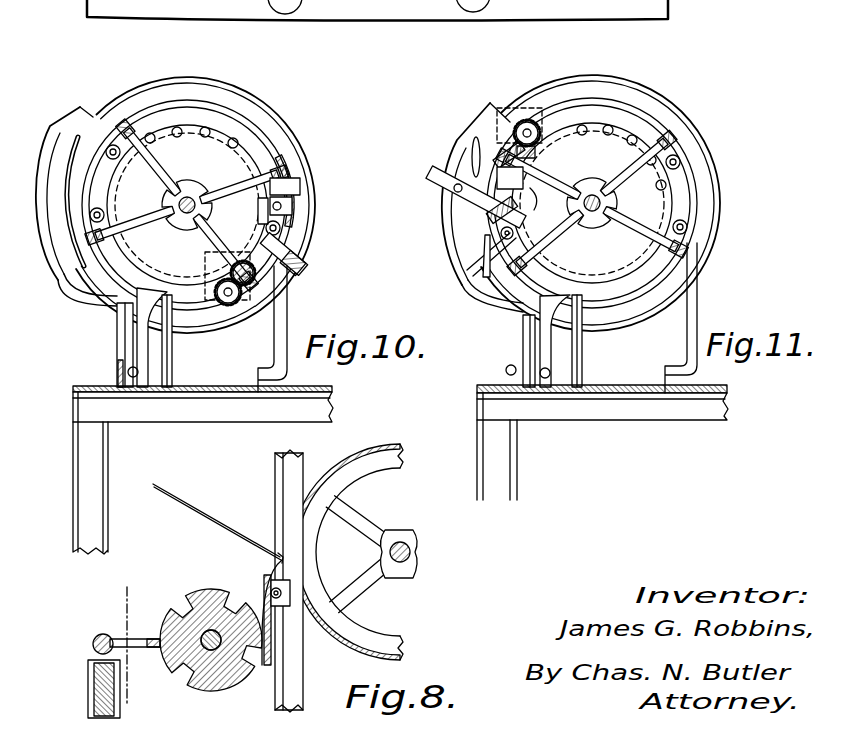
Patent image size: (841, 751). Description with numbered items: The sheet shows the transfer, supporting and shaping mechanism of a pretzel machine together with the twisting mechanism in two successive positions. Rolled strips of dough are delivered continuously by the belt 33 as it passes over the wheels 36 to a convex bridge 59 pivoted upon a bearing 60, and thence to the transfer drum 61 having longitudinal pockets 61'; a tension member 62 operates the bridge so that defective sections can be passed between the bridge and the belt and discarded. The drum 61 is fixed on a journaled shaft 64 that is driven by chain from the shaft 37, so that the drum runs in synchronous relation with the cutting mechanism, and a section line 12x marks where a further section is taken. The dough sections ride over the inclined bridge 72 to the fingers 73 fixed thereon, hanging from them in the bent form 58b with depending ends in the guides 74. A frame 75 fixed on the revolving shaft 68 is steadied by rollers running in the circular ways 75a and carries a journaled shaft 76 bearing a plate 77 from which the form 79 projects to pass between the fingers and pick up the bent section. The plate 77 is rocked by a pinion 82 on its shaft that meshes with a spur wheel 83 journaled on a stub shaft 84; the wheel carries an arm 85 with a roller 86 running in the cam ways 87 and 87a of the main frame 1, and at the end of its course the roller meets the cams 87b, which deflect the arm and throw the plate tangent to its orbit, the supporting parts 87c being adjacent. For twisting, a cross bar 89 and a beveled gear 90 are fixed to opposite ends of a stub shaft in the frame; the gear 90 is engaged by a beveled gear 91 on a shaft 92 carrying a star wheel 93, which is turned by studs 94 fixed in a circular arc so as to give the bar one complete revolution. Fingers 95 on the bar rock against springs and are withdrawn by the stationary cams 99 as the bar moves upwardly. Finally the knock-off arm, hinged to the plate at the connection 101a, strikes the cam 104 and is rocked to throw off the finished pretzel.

In FIG. 11, the frame 1 is at (674, 94).
In FIG. 8, the section line 12x is at (133, 643).
In FIG. 8, the belt 33 is at (363, 448).
In FIG. 8, the wheels 36 is at (385, 648).
In FIG. 8, the shaft 37 is at (416, 552).
In FIG. 10, the bent section of dough 58b is at (300, 178).
In FIG. 8, the bent section of dough 58b is at (95, 639).
In FIG. 8, the convex bridge 59 is at (268, 568).
In FIG. 8, the bearing 60 is at (282, 602).
In FIG. 8, the transfer drum 61 is at (211, 618).
In FIG. 8, the longitudinal channels or pockets 61' is at (160, 598).
In FIG. 8, the tension member 62 is at (207, 512).
In FIG. 8, the journaled shaft 64 is at (192, 675).
In FIG. 10, the journaled shaft 68 is at (187, 212).
In FIG. 11, the journaled shaft 68 is at (592, 216).
In FIG. 10, the inclined bridge 72 is at (88, 2).
In FIG. 8, the inclined bridge 72 is at (130, 645).
In FIG. 8, the fingers 73 is at (96, 652).
In FIG. 8, the guides 74 is at (90, 692).
In FIG. 10, the frame 75 is at (128, 133).
In FIG. 11, the frame 75 is at (612, 188).
In FIG. 10, the circular ways 75a is at (280, 165).
In FIG. 11, the circular ways 75a is at (606, 102).
In FIG. 10, the journaled shaft 76 is at (262, 208).
In FIG. 11, the journaled shaft 76 is at (498, 268).
In FIG. 10, the plate 77 is at (290, 152).
In FIG. 11, the plate 77 is at (472, 232).
In FIG. 10, the form 79 is at (300, 207).
In FIG. 10, the pinion 82 is at (300, 192).
In FIG. 11, the pinion 82 is at (490, 270).
In FIG. 10, the spur wheel 83 is at (266, 229).
In FIG. 10, the stub shaft 84 is at (298, 221).
In FIG. 11, the stub shaft 84 is at (478, 262).
In FIG. 10, the arm 85 is at (278, 264).
In FIG. 11, the arm 85 is at (440, 188).
In FIG. 10, the roller 86 is at (290, 268).
In FIG. 11, the roller 86 is at (445, 208).
In FIG. 10, the cam way 87 is at (206, 96).
In FIG. 11, the cam way 87 is at (643, 106).
In FIG. 10, the cam way 87a is at (60, 136).
In FIG. 11, the cam way 87a is at (482, 116).
In FIG. 10, the cams 87b is at (82, 290).
In FIG. 11, the cams 87b is at (500, 318).
In FIG. 10, the leg 87c is at (140, 318).
In FIG. 11, the leg 87c is at (553, 322).
In FIG. 10, the cross bar 89 is at (293, 249).
In FIG. 11, the cross bar 89 is at (520, 192).
In FIG. 10, the beveled gear 90 is at (255, 312).
In FIG. 11, the beveled gear 90 is at (530, 118).
In FIG. 10, the beveled gear 91 is at (218, 285).
In FIG. 10, the shaft 92 is at (224, 303).
In FIG. 11, the shaft 92 is at (563, 155).
In FIG. 10, the star wheel 93 is at (230, 320).
In FIG. 11, the star wheel 93 is at (524, 120).
In FIG. 10, the studs or pins 94 is at (150, 133).
In FIG. 11, the studs or pins 94 is at (592, 124).
In FIG. 10, the fingers 95 is at (298, 248).
In FIG. 11, the fingers 95 is at (476, 148).
In FIG. 10, the stationary cams 99 is at (284, 346).
In FIG. 11, the stationary cams 99 is at (698, 310).
In FIG. 10, the hinged connection 101a is at (355, 102).
In FIG. 11, the hinged connection 101a is at (468, 240).
In FIG. 10, the cam 104 is at (162, 308).
In FIG. 11, the cam 104 is at (580, 318).